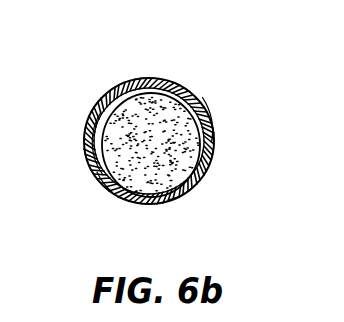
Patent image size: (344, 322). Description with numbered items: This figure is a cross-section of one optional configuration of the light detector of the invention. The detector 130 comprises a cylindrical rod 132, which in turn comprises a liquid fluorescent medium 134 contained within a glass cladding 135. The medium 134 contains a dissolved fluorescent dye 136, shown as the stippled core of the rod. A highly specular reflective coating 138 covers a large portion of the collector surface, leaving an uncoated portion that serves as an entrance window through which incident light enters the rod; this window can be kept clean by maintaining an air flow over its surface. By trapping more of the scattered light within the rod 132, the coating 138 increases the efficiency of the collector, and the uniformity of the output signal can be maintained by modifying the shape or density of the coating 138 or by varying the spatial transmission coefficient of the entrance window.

The detector 130 is at (192, 74).
The cylindrical rod 132 is at (107, 187).
The liquid fluorescent medium 134 is at (190, 145).
The glass cladding 135 is at (181, 195).
The fluorescent dye 136 is at (114, 148).
The reflective coating 138 is at (105, 101).